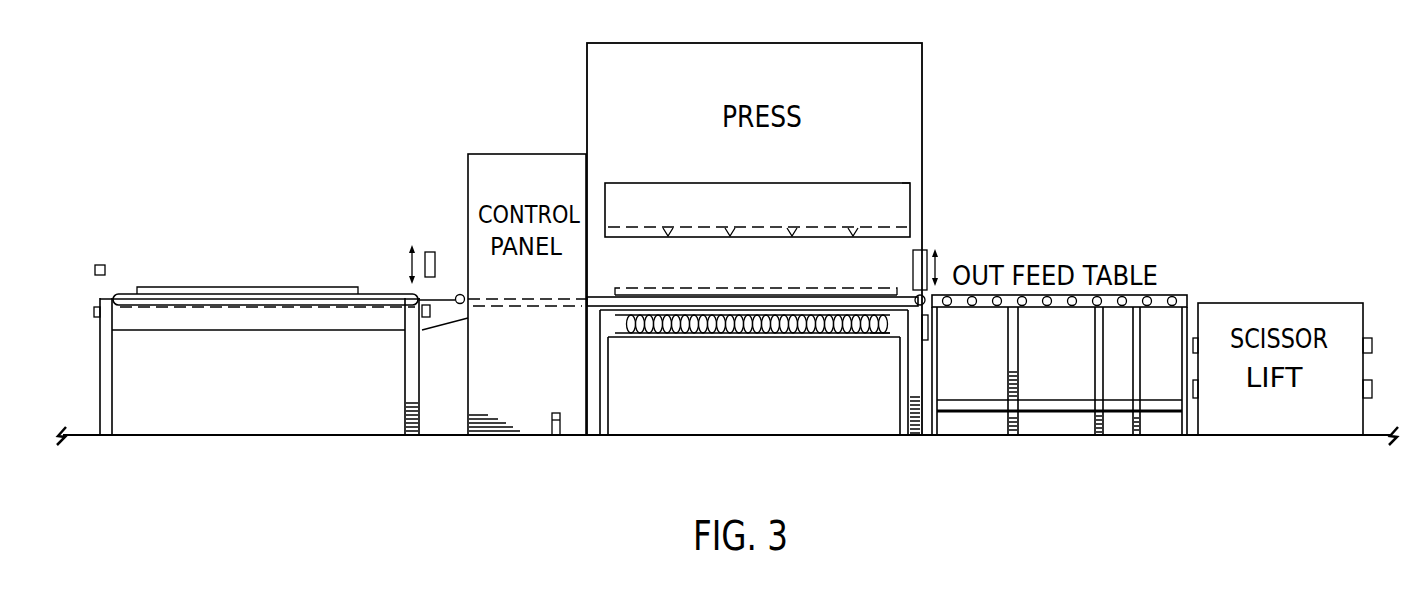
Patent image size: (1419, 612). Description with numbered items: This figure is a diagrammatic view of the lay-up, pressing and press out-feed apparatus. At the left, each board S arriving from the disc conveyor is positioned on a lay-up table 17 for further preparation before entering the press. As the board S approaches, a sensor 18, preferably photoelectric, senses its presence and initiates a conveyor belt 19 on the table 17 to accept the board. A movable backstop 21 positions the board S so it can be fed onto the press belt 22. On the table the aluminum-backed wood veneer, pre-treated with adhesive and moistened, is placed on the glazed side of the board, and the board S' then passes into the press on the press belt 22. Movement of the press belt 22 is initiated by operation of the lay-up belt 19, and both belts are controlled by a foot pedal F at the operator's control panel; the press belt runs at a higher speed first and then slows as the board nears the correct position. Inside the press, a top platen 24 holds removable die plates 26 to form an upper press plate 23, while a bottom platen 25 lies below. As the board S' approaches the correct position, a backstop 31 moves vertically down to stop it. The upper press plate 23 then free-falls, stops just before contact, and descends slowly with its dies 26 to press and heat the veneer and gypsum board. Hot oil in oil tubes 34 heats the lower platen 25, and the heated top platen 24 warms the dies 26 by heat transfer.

The lay-up table 17 is at (256, 330).
The sensor 18 is at (105, 270).
The conveyor belt 19 is at (324, 312).
The movable backstop 21 is at (429, 246).
The press belt 22 is at (550, 305).
The upper press plate 23 is at (902, 183).
The top platen 24 is at (683, 200).
The bottom platen 25 is at (617, 327).
The die plates 26 is at (712, 240).
The backstop 31 is at (935, 246).
The oil tubes 34 is at (870, 335).
The board S is at (247, 267).
The board with veneer S' is at (756, 275).
The foot pedal F is at (553, 441).